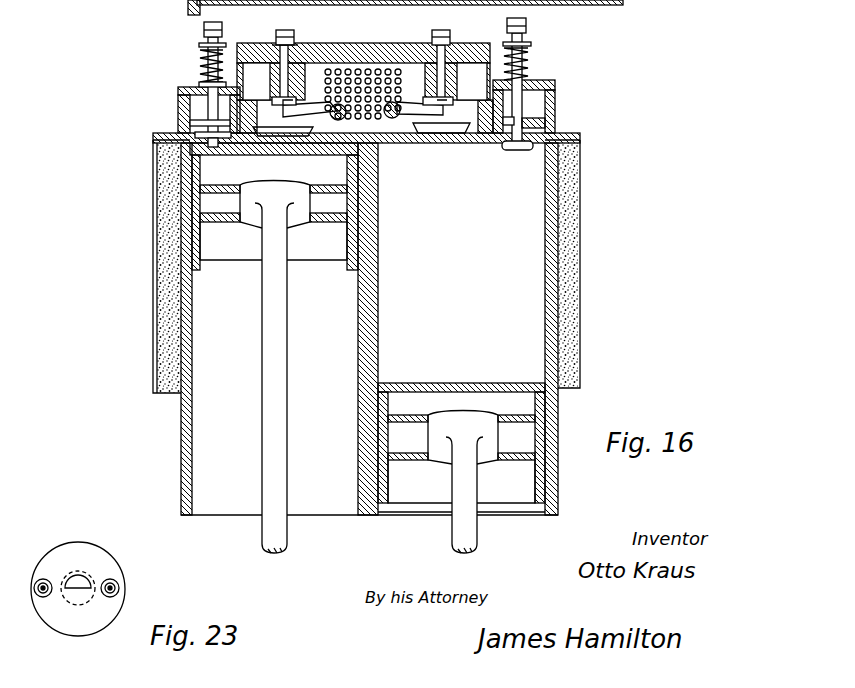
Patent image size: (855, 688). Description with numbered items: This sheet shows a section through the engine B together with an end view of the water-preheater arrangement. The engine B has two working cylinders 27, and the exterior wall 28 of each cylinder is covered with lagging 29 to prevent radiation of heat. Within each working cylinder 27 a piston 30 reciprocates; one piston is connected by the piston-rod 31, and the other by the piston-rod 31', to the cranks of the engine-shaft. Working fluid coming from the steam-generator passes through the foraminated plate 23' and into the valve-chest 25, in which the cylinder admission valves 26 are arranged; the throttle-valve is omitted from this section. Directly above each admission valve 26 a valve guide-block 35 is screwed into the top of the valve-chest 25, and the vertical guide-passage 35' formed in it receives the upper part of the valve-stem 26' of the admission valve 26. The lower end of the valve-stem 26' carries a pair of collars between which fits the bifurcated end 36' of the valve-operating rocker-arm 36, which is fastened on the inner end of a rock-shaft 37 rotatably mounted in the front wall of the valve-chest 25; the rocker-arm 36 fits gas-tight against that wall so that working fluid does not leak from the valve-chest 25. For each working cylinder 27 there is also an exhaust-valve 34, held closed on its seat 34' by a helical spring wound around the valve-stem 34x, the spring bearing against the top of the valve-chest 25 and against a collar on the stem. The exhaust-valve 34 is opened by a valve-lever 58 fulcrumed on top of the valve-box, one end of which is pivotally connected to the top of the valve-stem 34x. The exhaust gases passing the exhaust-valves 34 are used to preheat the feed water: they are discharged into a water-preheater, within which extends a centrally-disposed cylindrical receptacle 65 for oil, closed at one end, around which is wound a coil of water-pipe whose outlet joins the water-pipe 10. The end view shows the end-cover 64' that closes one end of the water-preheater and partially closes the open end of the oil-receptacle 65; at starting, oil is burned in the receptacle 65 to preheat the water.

In FIG. 16, the water-pipe 10 is at (171, 12).
In FIG. 23, the water-pipe 10 is at (120, 590).
In FIG. 16, the valve-lever 58 is at (204, 31).
In FIG. 16, the valve-chest 25 is at (178, 92).
In FIG. 16, the valve-stem 34x is at (190, 112).
In FIG. 16, the exhaust-valve 34 is at (325, 106).
In FIG. 16, the valve seat 34' is at (350, 130).
In FIG. 16, the vertical guide-passage 35' is at (365, 28).
In FIG. 16, the valve guide-block 35 is at (365, 56).
In FIG. 16, the valve-stem 26' is at (362, 62).
In FIG. 16, the foraminated plate 23' is at (365, 72).
In FIG. 16, the bifurcated end 36' is at (371, 127).
In FIG. 16, the valve-operating rocker-arm 36 is at (367, 302).
In FIG. 16, the cylinder admission valve 26 is at (358, 151).
In FIG. 16, the rock-shaft 37 is at (388, 120).
In FIG. 16, the engine B is at (140, 213).
In FIG. 16, the piston 30 is at (352, 243).
In FIG. 16, the exterior wall 28 is at (196, 352).
In FIG. 16, the lagging 29 is at (158, 298).
In FIG. 16, the piston-rod 31 is at (258, 378).
In FIG. 16, the working cylinder 27 is at (232, 523).
In FIG. 16, the piston-rod 31' is at (446, 496).
In FIG. 23, the end-cover 64' is at (78, 573).
In FIG. 23, the cylindrical receptacle for oil 65 is at (65, 603).